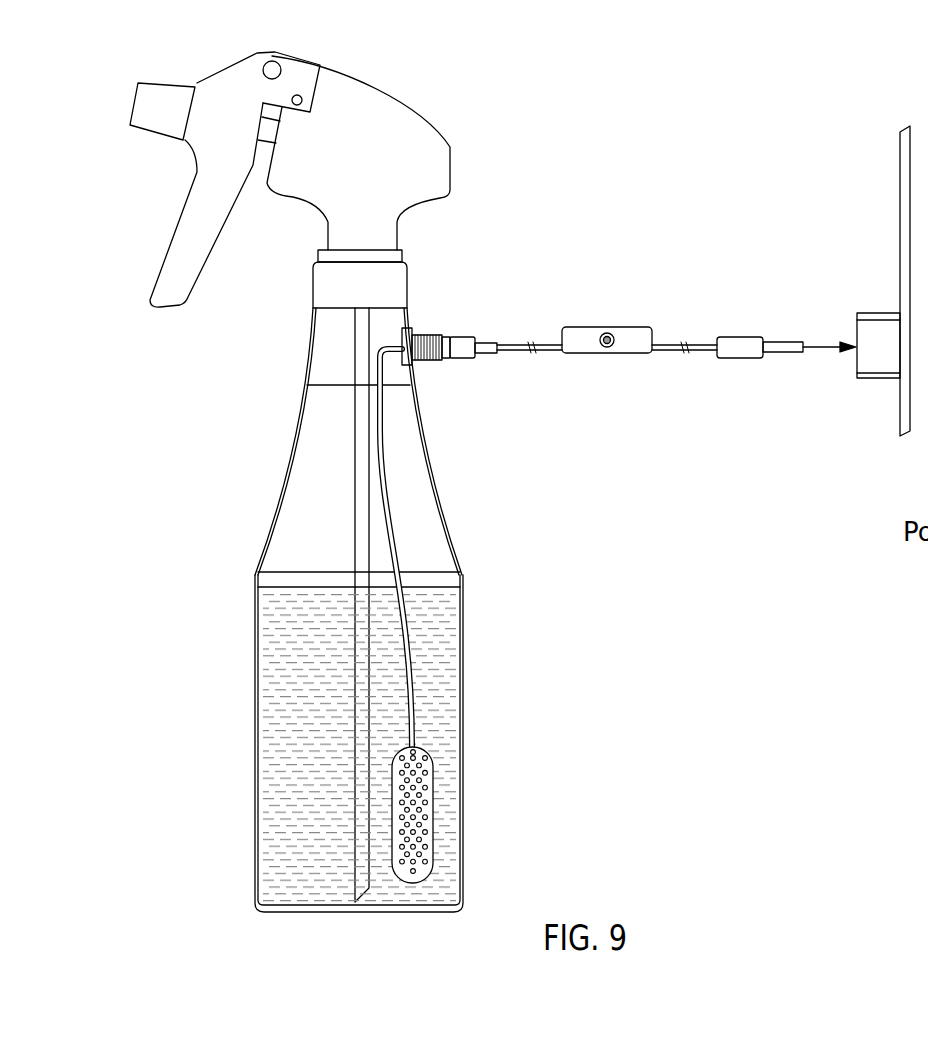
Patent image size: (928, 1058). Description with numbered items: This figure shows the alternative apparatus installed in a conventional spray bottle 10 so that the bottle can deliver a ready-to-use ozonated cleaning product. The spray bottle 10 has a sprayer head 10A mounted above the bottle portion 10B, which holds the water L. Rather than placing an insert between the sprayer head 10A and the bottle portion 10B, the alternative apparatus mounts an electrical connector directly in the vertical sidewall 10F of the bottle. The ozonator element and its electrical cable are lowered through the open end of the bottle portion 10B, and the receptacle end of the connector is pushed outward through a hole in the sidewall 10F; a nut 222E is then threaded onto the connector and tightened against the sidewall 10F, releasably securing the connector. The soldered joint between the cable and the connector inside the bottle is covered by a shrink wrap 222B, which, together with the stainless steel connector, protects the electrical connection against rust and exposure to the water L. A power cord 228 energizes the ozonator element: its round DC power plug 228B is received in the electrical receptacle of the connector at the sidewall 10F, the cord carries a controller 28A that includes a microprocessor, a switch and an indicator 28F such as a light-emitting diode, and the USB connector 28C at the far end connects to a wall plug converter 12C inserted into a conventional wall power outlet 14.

The spray bottle 10 is at (231, 577).
The sprayer head 10A is at (407, 105).
The sidewall 10F is at (311, 345).
The bottle portion 10B is at (453, 528).
The water L is at (447, 668).
The shrink wrap 222B is at (407, 375).
The nut 222E is at (413, 330).
The power cord 228 is at (805, 393).
The round DC power plug 228B is at (460, 340).
The controller 28A is at (636, 346).
The indicator 28F is at (599, 347).
The second USB connector 28C is at (738, 340).
The power outlet 12C is at (870, 376).
The wall power outlet 14 is at (900, 156).